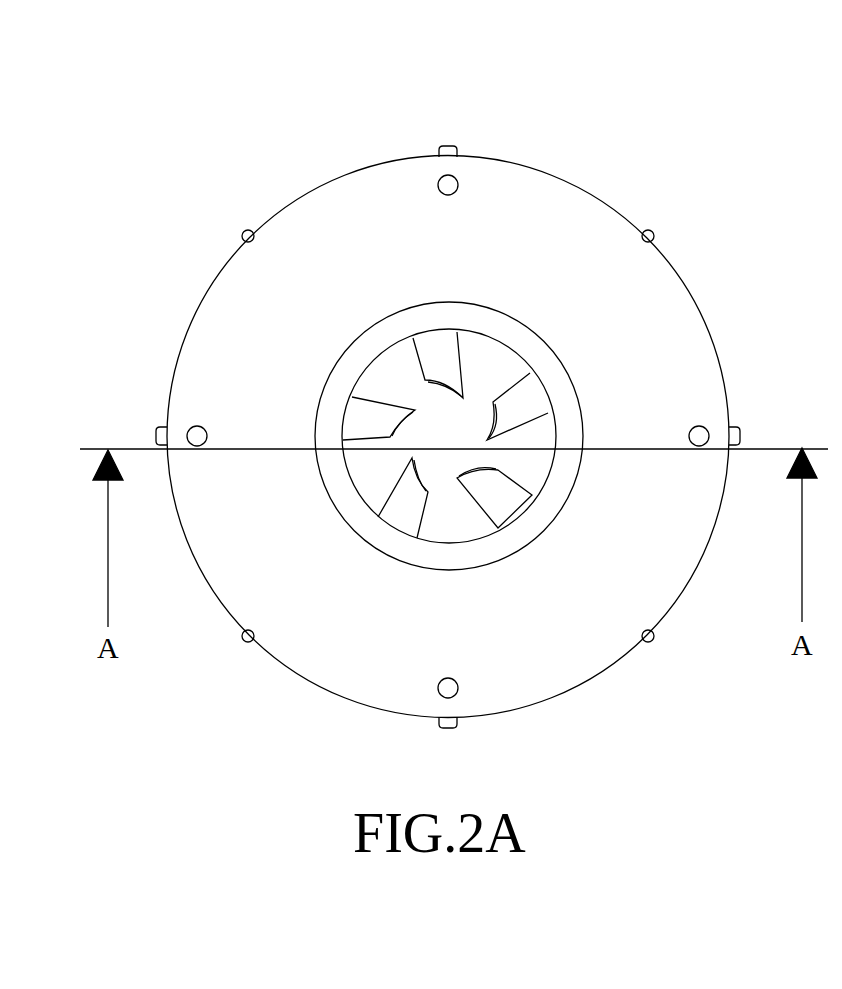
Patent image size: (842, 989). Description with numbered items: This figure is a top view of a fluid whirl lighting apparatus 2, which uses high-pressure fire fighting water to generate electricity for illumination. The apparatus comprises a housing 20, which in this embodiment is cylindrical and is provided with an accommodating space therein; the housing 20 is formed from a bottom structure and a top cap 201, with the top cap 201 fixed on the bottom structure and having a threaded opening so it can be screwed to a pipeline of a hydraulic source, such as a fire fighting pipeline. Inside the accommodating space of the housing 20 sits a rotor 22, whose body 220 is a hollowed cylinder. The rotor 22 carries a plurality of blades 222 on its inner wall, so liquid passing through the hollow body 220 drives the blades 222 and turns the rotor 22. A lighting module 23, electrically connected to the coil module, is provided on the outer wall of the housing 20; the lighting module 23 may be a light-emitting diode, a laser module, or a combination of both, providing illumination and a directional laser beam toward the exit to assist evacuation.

The fluid whirl lighting apparatus 2 is at (122, 130).
The housing 20 is at (310, 180).
The top cap 201 is at (692, 347).
The rotor 22 is at (320, 360).
The body of the rotor 220 is at (433, 318).
The blades 222 is at (532, 400).
The lighting module 23 is at (430, 128).